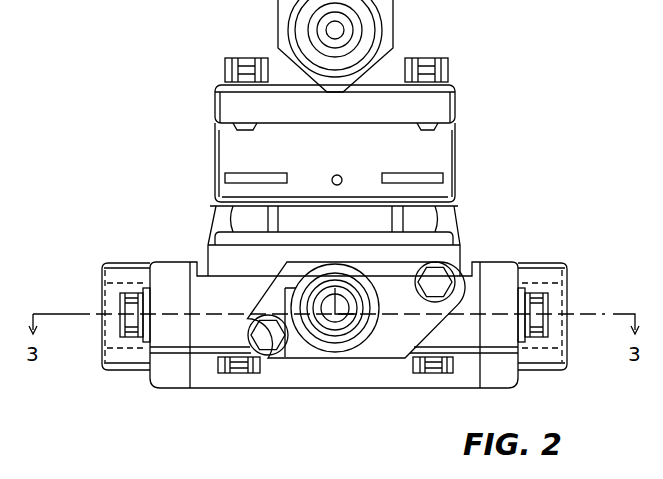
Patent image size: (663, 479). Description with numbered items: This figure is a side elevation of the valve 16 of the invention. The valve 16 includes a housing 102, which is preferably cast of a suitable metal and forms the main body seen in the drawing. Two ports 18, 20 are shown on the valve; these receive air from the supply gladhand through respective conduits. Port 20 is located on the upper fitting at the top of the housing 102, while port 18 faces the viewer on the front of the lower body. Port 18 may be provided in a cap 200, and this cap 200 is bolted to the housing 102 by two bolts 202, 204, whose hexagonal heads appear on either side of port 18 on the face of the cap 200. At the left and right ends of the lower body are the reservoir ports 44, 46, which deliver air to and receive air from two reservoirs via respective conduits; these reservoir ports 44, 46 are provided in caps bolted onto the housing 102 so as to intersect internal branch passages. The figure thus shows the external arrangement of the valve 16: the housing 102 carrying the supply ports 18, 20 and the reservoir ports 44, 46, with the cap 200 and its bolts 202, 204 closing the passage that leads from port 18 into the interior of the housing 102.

The valve 16 is at (478, 112).
The port 18 is at (350, 298).
The port 20 is at (355, 27).
The reservoir port 44 is at (103, 291).
The reservoir port 46 is at (568, 286).
The housing 102 is at (457, 156).
The cap 200 is at (357, 312).
The bolt 202 is at (262, 334).
The bolt 204 is at (443, 278).